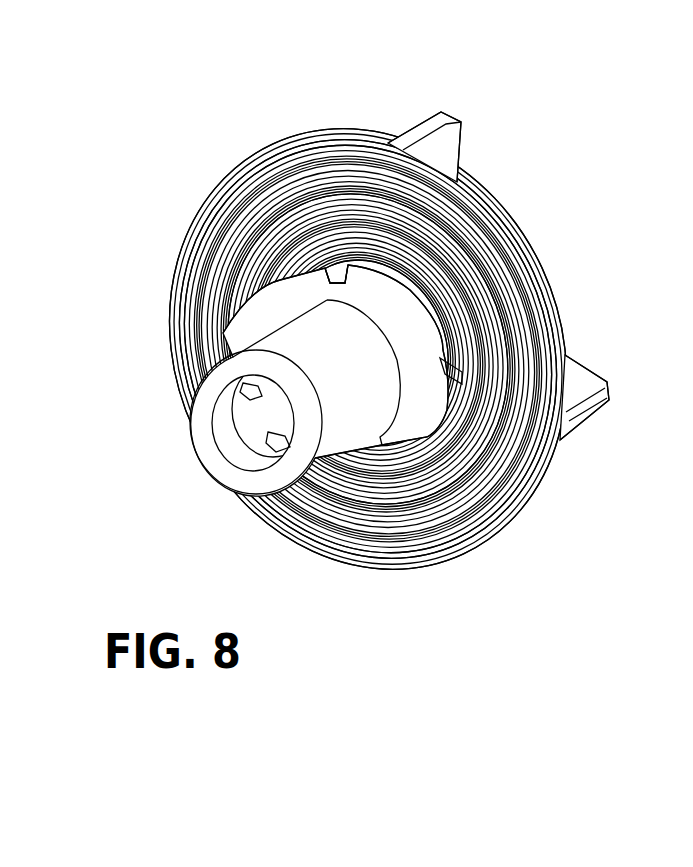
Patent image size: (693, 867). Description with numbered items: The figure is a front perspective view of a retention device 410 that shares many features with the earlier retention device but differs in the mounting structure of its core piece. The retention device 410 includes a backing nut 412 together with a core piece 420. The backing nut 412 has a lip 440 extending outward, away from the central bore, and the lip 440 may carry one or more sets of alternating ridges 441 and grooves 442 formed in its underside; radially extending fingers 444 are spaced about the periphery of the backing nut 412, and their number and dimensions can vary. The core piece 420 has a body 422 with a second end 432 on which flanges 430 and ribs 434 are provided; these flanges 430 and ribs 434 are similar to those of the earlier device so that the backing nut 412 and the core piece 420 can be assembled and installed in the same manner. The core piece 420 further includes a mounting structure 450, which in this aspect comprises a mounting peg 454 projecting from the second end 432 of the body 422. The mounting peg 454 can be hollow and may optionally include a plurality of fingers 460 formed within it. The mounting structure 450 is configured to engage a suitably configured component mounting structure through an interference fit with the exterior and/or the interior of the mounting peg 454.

The retention device 410 is at (530, 175).
The backing nut 412 is at (570, 292).
The core piece 420 is at (402, 453).
The body 422 is at (323, 268).
The flanges 430 is at (437, 357).
The second end 432 is at (232, 223).
The ribs 434 is at (478, 392).
The lip 440 is at (347, 130).
The ridges 441 is at (193, 222).
The grooves 442 is at (183, 250).
The radially extending fingers 444 is at (463, 120).
The mounting structure 450 is at (362, 339).
The mounting peg 454 is at (336, 453).
The fingers 460 is at (290, 410).